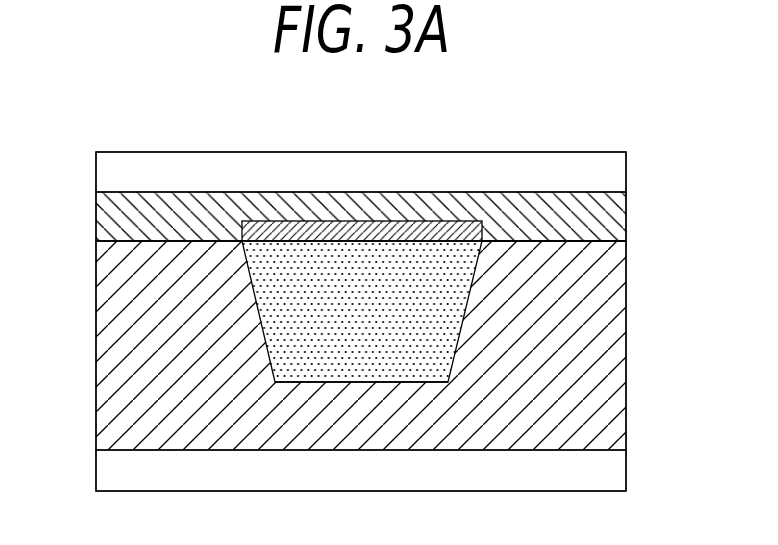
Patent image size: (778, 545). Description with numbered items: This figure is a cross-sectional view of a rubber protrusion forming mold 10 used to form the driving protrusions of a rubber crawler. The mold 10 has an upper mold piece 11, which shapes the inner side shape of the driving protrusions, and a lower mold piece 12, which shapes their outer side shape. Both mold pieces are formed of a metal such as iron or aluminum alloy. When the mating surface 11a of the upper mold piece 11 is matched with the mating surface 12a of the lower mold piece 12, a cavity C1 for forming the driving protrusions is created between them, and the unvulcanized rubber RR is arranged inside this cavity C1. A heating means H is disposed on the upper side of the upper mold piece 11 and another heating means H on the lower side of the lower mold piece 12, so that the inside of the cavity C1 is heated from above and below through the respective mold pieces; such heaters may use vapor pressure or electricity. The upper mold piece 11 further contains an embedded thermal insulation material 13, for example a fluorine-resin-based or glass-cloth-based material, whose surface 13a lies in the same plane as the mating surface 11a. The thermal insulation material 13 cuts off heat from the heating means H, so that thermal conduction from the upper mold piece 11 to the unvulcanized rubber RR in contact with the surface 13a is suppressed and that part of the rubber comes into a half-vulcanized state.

The rubber protrusion forming mold 10 is at (550, 123).
The upper mold piece 11 is at (123, 218).
The lower mold piece 12 is at (140, 351).
The thermal insulation material 13 is at (283, 230).
The mating surface of the lower mold piece 12a is at (598, 241).
The mating surface of the upper mold piece 11a is at (578, 246).
The surface of the thermal insulation material 13a is at (432, 243).
The cavity C1 is at (329, 330).
The unvulcanized rubber RR is at (373, 357).
The heating means H is at (450, 170).